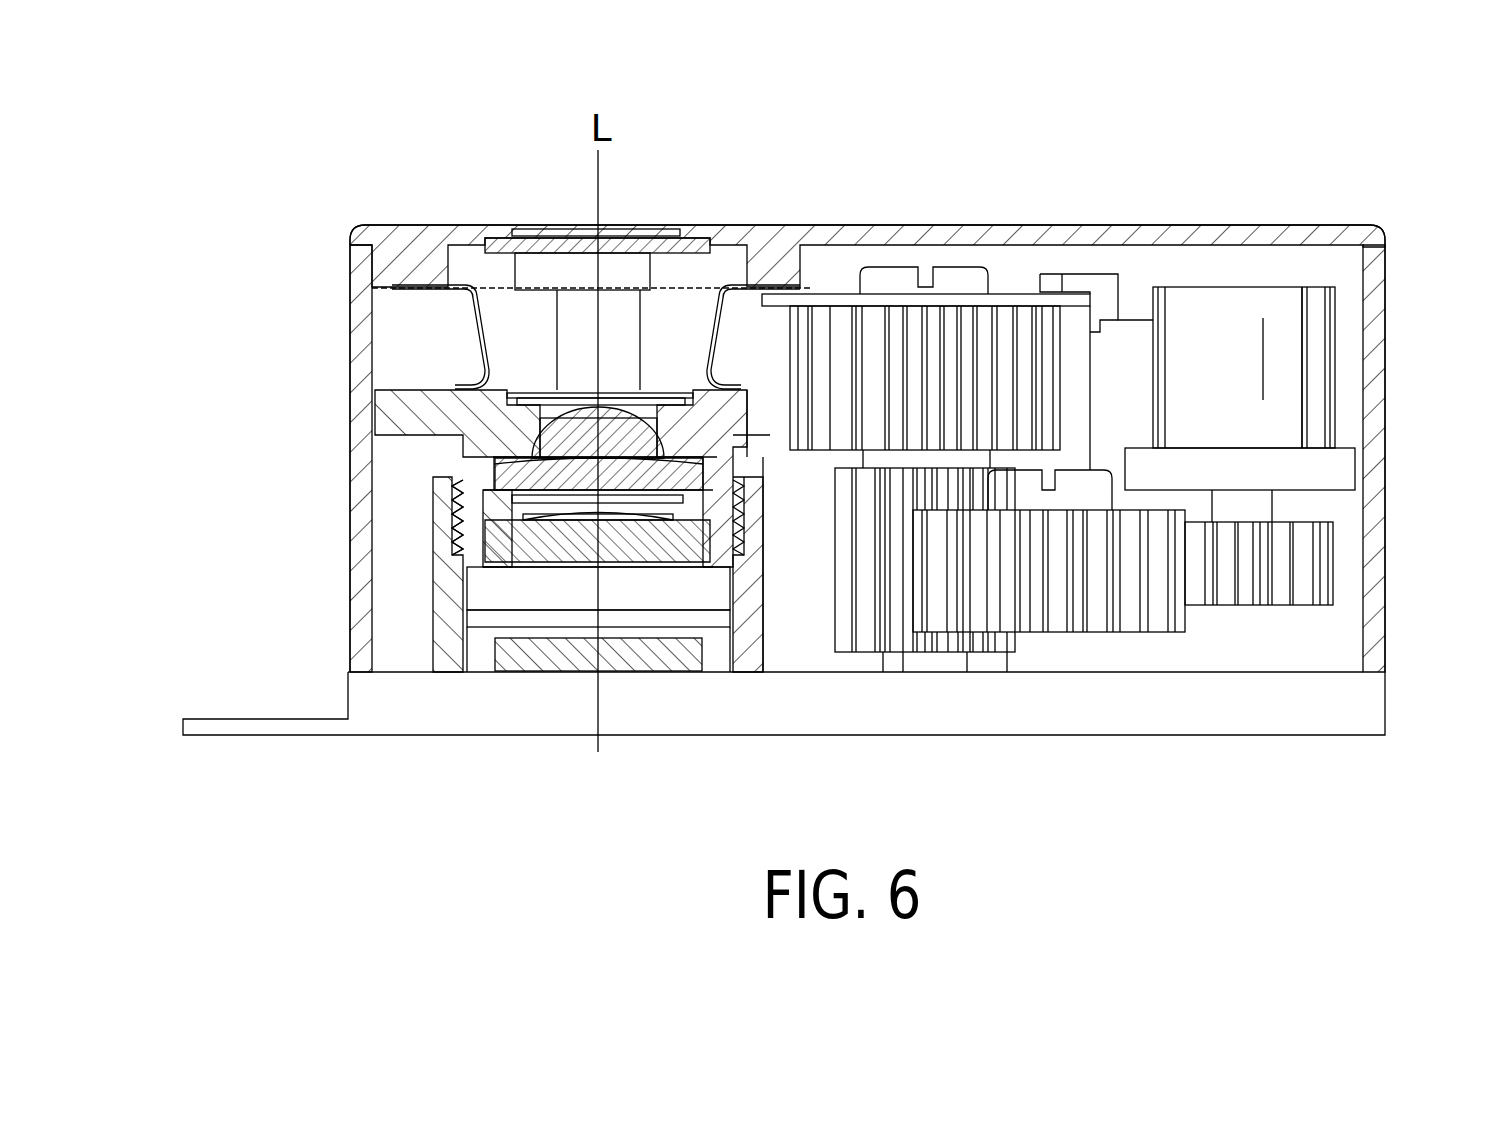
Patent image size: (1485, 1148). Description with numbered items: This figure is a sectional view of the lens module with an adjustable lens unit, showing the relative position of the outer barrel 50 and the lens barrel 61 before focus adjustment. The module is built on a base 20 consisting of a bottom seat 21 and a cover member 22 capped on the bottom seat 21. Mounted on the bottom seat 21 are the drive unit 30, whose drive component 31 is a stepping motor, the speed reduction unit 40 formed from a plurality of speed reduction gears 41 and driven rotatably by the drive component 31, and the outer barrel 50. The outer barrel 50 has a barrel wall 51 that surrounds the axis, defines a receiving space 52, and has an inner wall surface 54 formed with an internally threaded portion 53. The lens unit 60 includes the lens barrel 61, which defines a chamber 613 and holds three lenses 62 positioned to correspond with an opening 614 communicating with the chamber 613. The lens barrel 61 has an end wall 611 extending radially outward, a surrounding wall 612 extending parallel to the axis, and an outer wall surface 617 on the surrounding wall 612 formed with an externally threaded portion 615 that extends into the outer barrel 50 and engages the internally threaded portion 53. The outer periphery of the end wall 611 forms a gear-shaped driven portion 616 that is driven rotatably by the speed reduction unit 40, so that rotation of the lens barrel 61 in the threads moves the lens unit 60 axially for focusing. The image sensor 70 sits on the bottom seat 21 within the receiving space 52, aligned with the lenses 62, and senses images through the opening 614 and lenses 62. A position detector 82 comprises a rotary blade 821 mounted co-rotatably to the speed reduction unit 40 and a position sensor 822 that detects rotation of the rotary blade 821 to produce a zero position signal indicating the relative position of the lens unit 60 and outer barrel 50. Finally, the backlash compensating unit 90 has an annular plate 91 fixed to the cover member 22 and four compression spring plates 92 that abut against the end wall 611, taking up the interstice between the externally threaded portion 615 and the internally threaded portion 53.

The base 20 is at (742, 475).
The bottom seat 21 is at (390, 707).
The cover member 22 is at (381, 232).
The drive unit 30 is at (1295, 368).
The drive component 31 is at (1325, 318).
The speed reduction unit 40 is at (973, 483).
The speed reduction gears 41 is at (903, 312).
The outer barrel 50 is at (470, 642).
The barrel wall 51 is at (448, 650).
The receiving space 52 is at (482, 598).
The internally threaded portion 53 is at (443, 517).
The inner wall surface 54 is at (735, 595).
The lens unit 60 is at (519, 470).
The lens barrel 61 is at (519, 470).
The end wall 611 is at (505, 410).
The surrounding wall 612 is at (485, 525).
The chamber 613 is at (490, 470).
The opening 614 is at (548, 410).
The externally threaded portion 615 is at (598, 517).
The driven portion 616 is at (768, 405).
The outer wall surface 617 is at (775, 470).
The lenses 62 is at (622, 405).
The image sensor 70 is at (516, 680).
The position detector 82 is at (1068, 285).
The rotary blade 821 is at (1002, 296).
The position sensor 822 is at (1062, 275).
The backlash compensating unit 90 is at (540, 241).
The annular plate 91 is at (690, 240).
The compression spring plates 92 is at (473, 302).